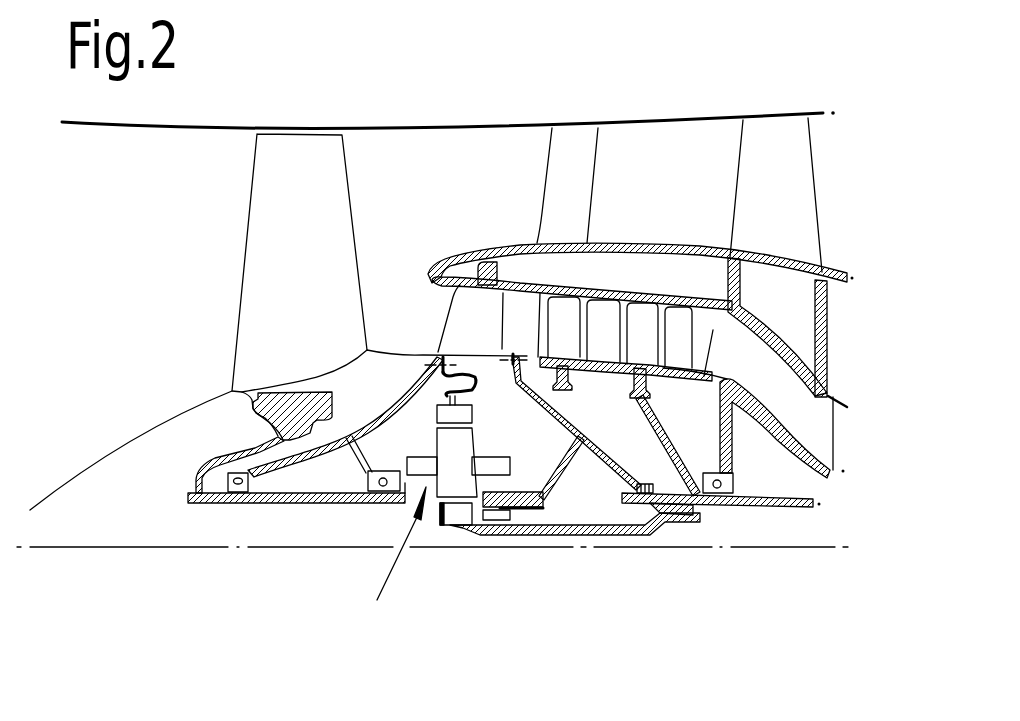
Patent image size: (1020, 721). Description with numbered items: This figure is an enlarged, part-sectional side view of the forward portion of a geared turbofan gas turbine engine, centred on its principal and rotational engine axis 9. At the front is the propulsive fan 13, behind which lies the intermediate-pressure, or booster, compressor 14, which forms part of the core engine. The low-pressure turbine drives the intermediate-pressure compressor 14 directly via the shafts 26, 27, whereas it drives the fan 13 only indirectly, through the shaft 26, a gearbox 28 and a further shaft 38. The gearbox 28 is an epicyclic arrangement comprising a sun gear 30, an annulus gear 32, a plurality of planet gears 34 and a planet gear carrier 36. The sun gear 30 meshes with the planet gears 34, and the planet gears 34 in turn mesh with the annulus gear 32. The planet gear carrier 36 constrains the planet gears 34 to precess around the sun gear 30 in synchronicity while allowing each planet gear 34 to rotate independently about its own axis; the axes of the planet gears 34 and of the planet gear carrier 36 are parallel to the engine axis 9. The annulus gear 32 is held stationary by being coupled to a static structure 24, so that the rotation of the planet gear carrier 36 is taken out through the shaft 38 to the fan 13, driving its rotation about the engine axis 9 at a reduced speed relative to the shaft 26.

The principal and rotational axis 9 is at (180, 548).
The propulsive fan 13 is at (268, 248).
The intermediate-pressure compressor 14 is at (637, 330).
The static structure 24 is at (470, 321).
The shaft 26 is at (706, 507).
The shaft 27 is at (670, 427).
The gearbox 28 is at (391, 561).
The sun gear 30 is at (460, 515).
The annulus gear 32 is at (456, 415).
The planet gears 34 is at (455, 470).
The planet gear carrier 36 is at (407, 497).
The shaft 38 is at (257, 506).